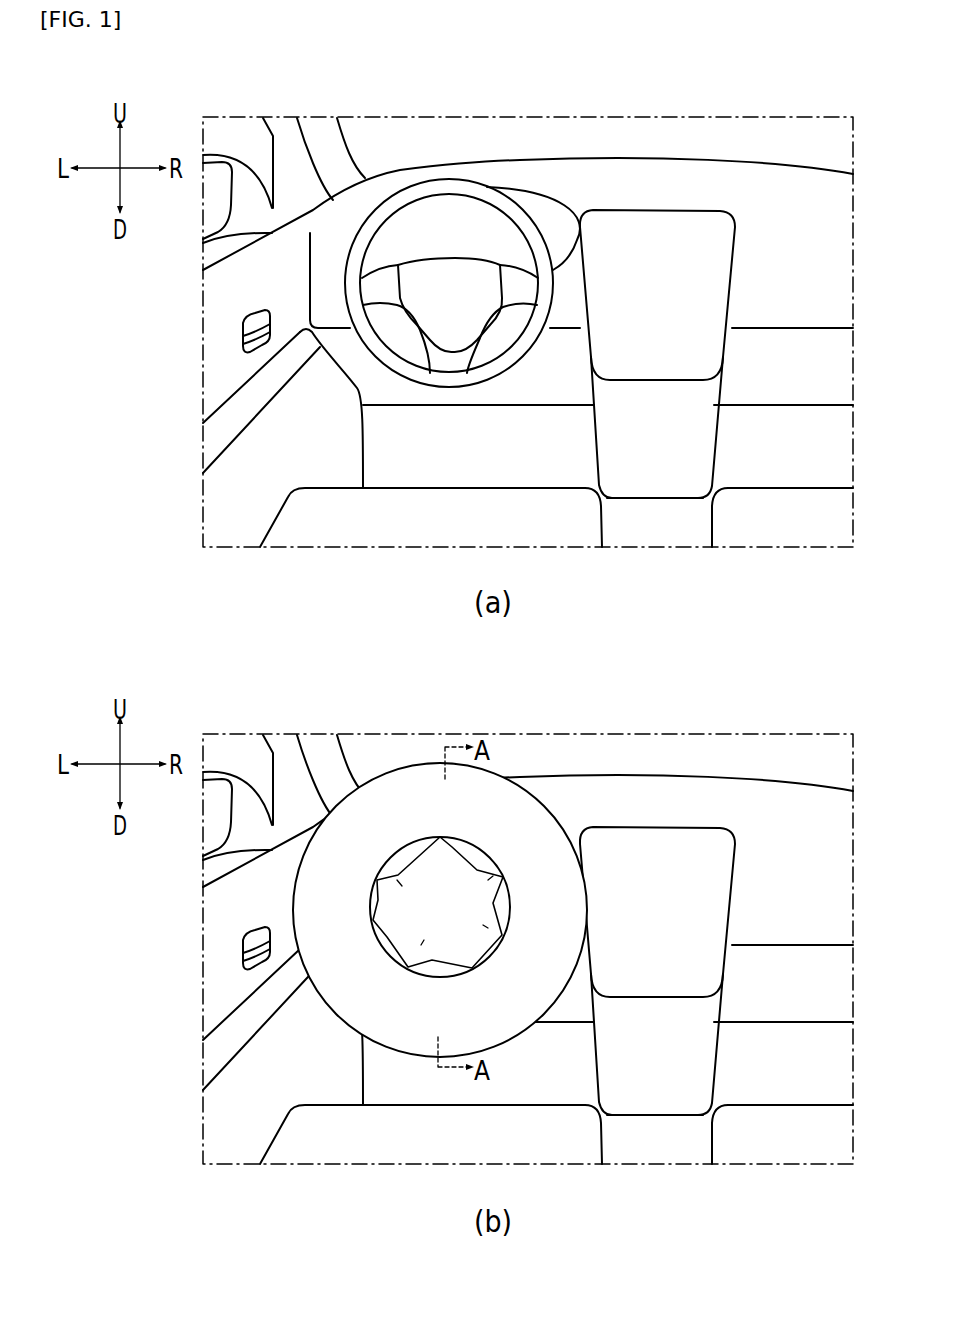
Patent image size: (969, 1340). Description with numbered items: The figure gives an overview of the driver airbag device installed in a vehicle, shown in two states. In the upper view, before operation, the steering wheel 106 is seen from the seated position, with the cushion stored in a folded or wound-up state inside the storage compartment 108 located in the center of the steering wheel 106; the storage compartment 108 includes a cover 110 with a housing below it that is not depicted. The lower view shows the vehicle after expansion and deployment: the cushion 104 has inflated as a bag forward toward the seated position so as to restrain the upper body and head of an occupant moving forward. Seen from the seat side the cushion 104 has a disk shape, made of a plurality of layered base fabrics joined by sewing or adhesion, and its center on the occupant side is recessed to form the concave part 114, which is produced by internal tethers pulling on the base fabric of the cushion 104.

The cushion 104 is at (513, 793).
The steering wheel 106 is at (467, 182).
The storage compartment 108 is at (473, 258).
The cover 110 is at (452, 328).
The concave part 114 is at (432, 878).